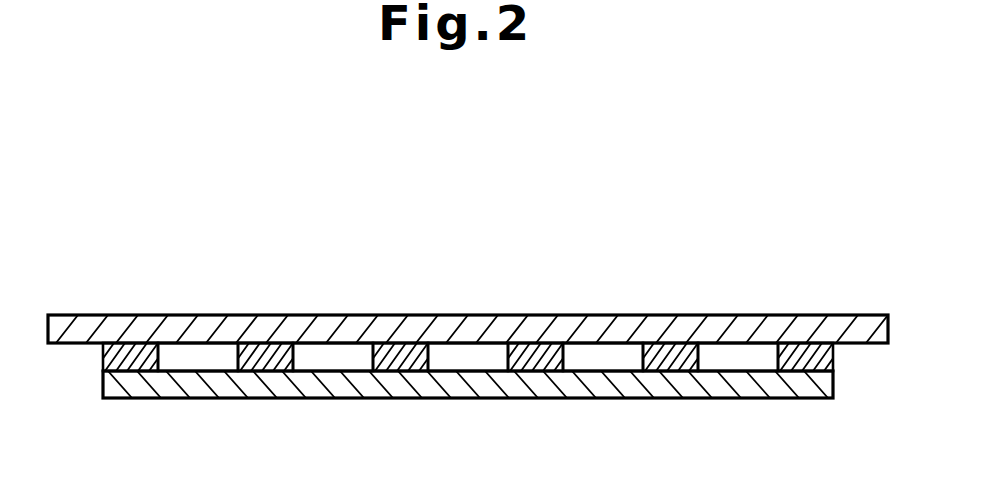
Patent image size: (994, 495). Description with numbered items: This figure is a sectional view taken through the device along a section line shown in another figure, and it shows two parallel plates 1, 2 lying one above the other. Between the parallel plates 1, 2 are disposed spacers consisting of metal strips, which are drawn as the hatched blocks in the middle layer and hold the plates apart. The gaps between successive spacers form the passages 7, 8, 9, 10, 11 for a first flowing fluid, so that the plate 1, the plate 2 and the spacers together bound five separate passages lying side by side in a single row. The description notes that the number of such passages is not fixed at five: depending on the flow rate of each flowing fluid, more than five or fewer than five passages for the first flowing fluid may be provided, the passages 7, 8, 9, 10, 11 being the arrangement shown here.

The parallel plate 1 is at (132, 382).
The parallel plate 2 is at (108, 327).
The passage for a first flowing fluid 7 is at (202, 360).
The passage for a first flowing fluid 8 is at (330, 355).
The passage for a first flowing fluid 9 is at (468, 358).
The passage for a first flowing fluid 10 is at (613, 360).
The passage for a first flowing fluid 11 is at (736, 355).